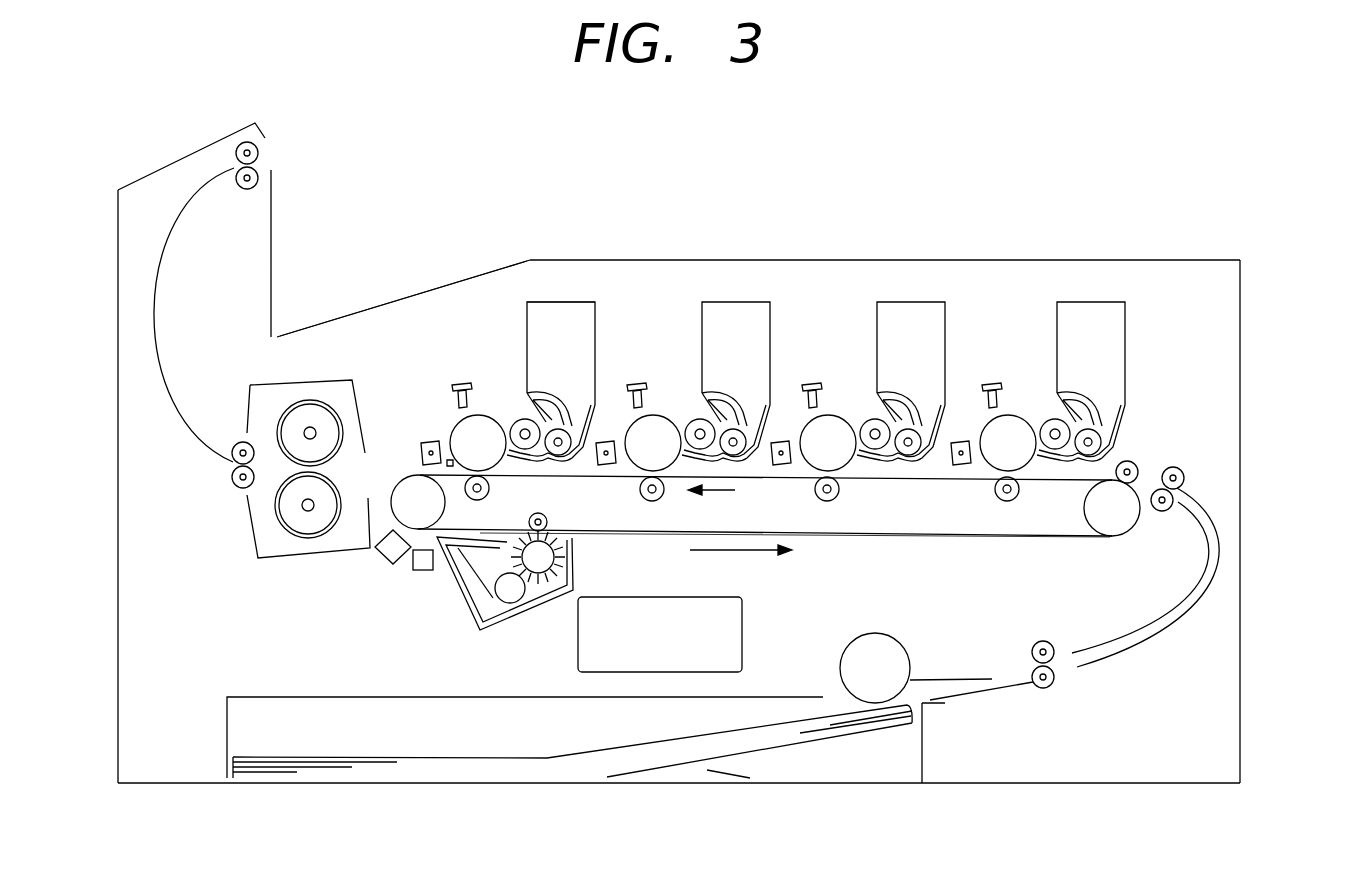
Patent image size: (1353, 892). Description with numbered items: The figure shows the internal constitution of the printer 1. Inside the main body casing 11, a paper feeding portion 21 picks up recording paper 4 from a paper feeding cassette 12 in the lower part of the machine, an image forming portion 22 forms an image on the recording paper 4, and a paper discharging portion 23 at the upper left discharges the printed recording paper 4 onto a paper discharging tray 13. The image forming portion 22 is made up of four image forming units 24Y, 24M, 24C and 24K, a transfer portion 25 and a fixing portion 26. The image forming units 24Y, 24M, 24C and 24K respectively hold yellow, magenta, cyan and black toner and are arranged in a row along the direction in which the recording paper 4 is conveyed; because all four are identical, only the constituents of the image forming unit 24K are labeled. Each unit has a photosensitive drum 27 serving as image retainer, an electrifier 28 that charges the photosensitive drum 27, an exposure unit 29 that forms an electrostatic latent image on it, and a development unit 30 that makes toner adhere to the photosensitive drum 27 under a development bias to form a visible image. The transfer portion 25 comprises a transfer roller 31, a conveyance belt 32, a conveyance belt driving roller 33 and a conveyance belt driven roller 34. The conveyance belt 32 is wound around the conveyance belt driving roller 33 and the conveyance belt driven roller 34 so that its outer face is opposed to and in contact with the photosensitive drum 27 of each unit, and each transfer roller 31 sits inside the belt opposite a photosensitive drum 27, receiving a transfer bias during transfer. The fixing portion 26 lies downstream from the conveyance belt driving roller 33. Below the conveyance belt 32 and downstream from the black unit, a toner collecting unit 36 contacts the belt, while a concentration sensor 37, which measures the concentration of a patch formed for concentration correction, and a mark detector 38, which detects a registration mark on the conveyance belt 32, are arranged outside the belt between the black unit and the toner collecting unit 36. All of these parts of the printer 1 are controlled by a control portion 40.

The printer 1 is at (823, 182).
The recording paper 4 is at (556, 772).
The main body casing 11 is at (1241, 418).
The paper feeding cassette 12 is at (925, 760).
The paper discharging tray 13 is at (330, 320).
The paper feeding portion 21 is at (1207, 742).
The image forming portion 22 is at (1198, 302).
The paper discharging portion 23 is at (286, 256).
The image forming unit 24K is at (492, 306).
The image forming unit 24C is at (684, 306).
The image forming unit 24M is at (853, 306).
The image forming unit 24Y is at (1022, 306).
The transfer portion 25 is at (860, 492).
The fixing portion 26 is at (247, 405).
The photosensitive drum 27 is at (454, 428).
The electrifier 28 is at (430, 442).
The exposure unit 29 is at (459, 383).
The development unit 30 is at (576, 302).
The transfer roller 31 is at (482, 500).
The conveyance belt 32 is at (955, 540).
The conveyance belt driving roller 33 is at (400, 512).
The conveyance belt driven roller 34 is at (1130, 517).
The toner collecting unit 36 is at (547, 558).
The concentration sensor 37 is at (385, 560).
The mark detector 38 is at (425, 572).
The control portion 40 is at (577, 650).